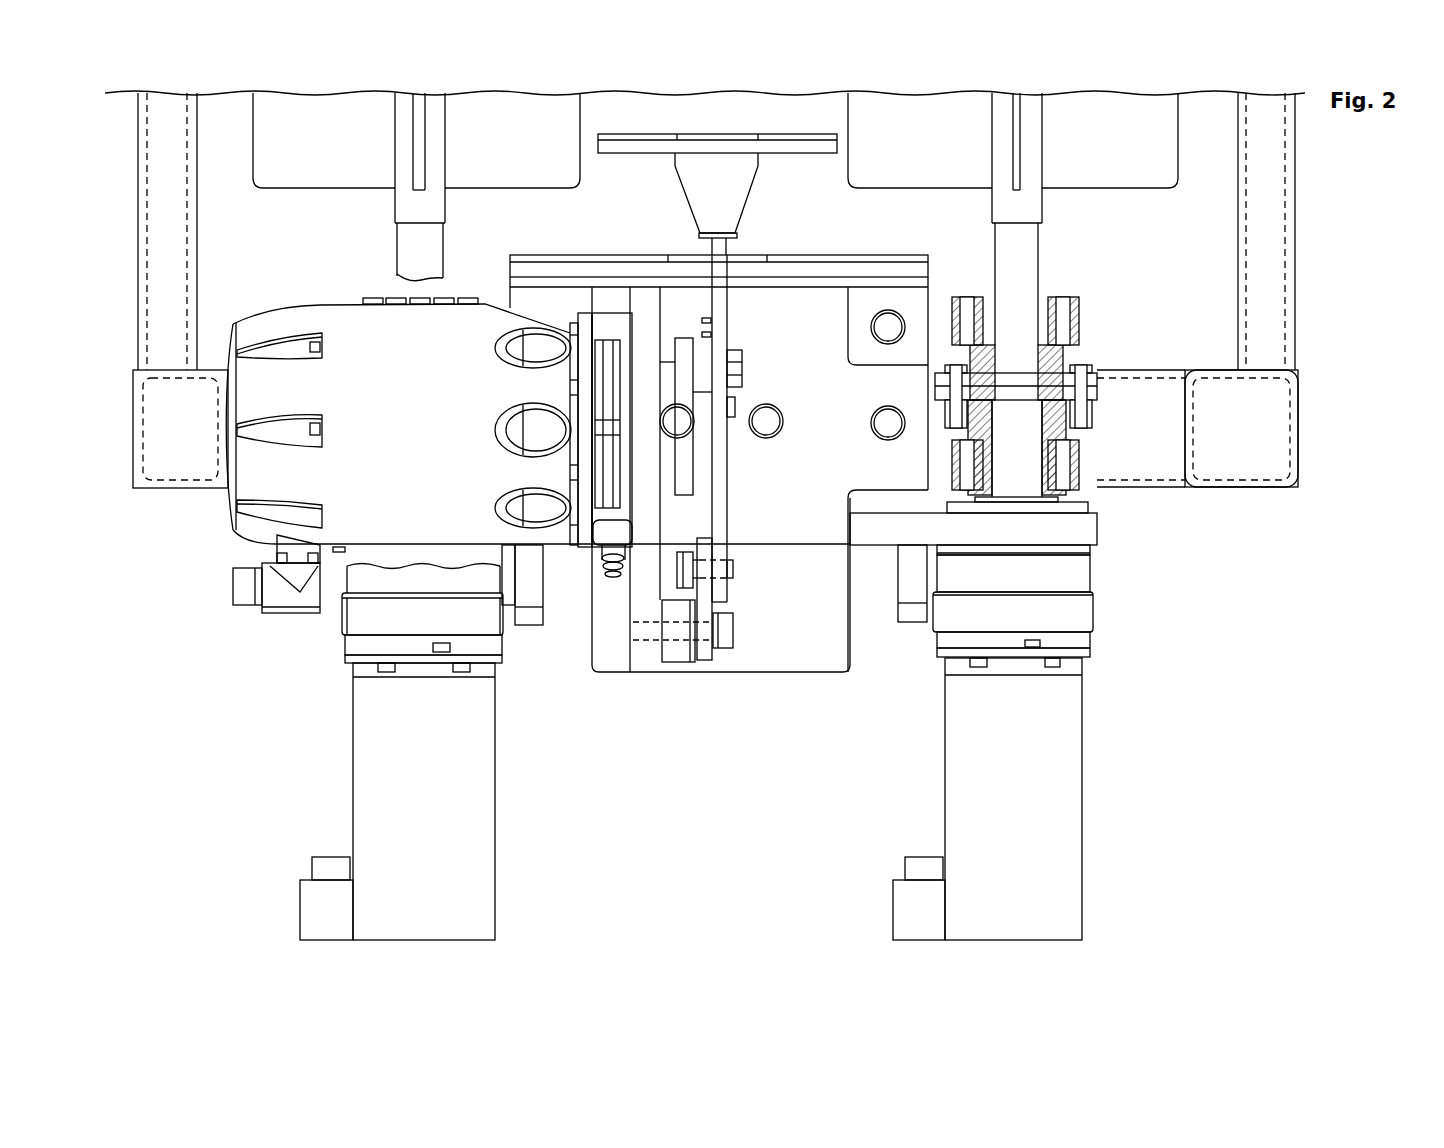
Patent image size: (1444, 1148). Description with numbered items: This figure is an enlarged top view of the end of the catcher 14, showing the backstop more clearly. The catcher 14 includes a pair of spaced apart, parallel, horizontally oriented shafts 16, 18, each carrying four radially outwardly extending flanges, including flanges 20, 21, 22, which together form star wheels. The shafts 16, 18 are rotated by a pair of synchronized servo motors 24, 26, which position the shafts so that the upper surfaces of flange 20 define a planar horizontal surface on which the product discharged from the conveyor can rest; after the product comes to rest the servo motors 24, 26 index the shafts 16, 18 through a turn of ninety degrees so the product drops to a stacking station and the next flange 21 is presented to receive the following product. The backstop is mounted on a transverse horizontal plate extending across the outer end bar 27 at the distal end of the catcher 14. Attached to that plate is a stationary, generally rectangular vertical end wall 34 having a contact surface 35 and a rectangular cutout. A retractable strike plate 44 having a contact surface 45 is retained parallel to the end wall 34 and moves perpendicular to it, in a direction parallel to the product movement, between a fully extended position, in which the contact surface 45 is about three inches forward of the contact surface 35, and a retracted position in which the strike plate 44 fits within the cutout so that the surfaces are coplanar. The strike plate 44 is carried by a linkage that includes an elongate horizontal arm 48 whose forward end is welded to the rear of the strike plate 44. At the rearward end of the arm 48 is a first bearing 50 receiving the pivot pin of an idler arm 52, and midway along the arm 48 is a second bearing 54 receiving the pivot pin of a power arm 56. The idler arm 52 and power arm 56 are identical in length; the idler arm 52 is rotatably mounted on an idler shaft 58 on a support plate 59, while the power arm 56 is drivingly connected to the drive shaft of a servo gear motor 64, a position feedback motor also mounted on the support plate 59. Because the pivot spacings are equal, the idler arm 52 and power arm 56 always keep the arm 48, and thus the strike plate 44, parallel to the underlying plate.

The catcher 14 is at (1314, 379).
The shaft 16 is at (1040, 247).
The shaft 18 is at (393, 150).
The flange 20 is at (515, 118).
The flange 21 is at (1020, 140).
The flange 22 is at (1180, 152).
The servo motor 24 is at (1082, 777).
The servo motor 26 is at (350, 725).
The outer end bar 27 is at (1158, 488).
The stationary end wall 34 is at (930, 268).
The contact surface 35 is at (555, 255).
The strike plate 44 is at (620, 145).
The contact surface 45 is at (825, 133).
The horizontal arm 48 is at (733, 510).
The first bearing 50 is at (735, 575).
The idler arm 52 is at (690, 607).
The second bearing 54 is at (745, 355).
The power arm 56 is at (730, 425).
The idler shaft 58 is at (680, 642).
The support plate 59 is at (643, 672).
The servo gear motor 64 is at (287, 305).